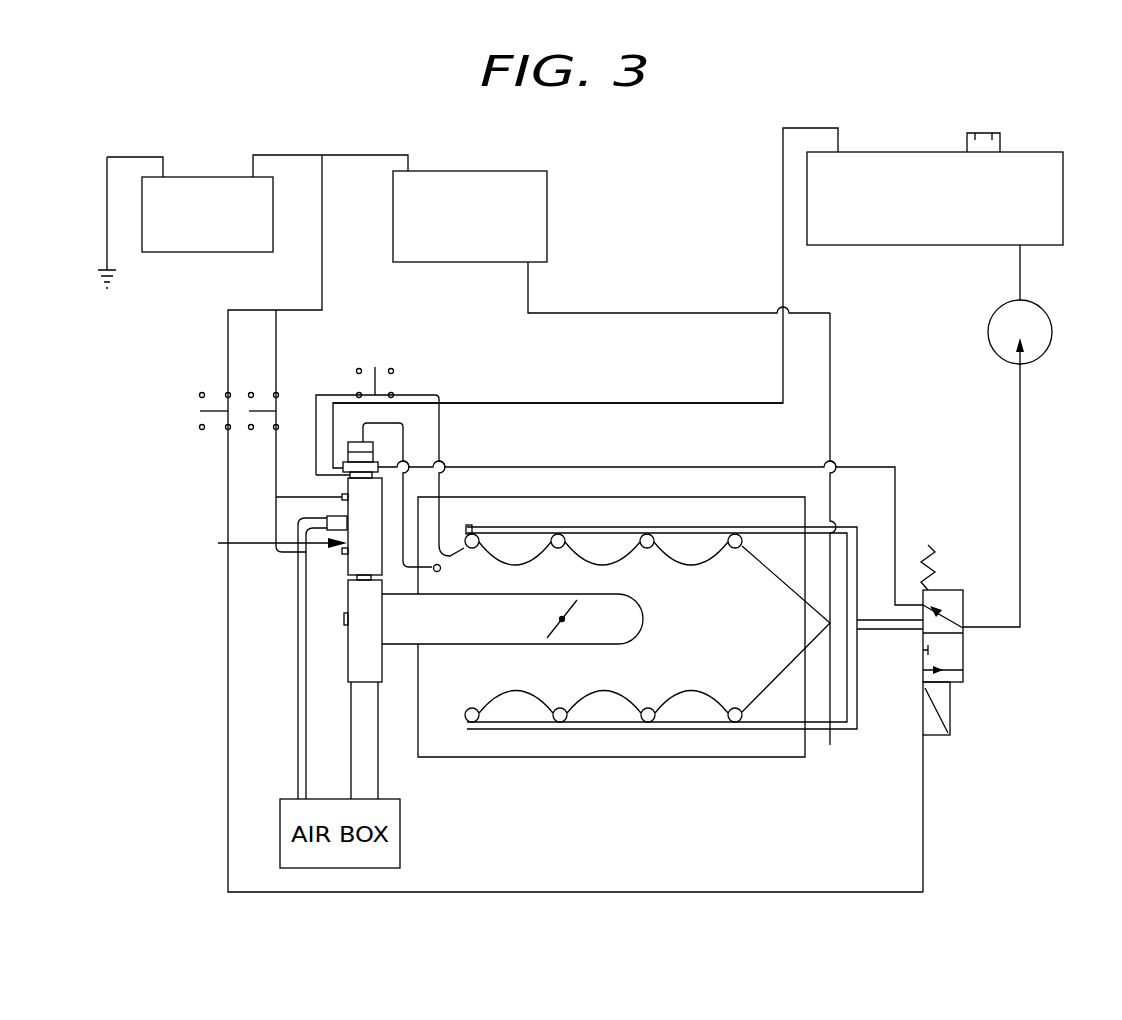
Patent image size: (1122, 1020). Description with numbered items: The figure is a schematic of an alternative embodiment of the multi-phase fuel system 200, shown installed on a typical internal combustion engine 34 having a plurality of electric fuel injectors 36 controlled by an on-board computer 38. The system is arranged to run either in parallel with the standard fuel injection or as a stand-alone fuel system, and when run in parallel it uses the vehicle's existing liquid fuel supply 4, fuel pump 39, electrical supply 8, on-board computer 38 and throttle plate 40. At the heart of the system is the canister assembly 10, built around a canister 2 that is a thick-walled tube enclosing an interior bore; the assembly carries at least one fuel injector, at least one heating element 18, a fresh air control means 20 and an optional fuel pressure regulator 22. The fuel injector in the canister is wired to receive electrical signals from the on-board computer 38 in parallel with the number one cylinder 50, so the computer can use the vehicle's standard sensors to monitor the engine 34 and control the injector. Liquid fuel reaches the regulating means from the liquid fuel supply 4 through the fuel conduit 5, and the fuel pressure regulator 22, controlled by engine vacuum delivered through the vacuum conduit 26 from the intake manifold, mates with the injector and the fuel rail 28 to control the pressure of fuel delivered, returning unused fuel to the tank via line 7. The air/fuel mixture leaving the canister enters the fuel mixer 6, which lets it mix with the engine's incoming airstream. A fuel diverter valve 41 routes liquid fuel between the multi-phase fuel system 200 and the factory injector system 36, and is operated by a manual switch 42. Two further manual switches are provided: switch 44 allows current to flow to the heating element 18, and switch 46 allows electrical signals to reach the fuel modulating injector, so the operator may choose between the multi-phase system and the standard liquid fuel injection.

The multi-phase fuel system 200 is at (630, 163).
The canister 2 is at (348, 578).
The liquid fuel supply 4 is at (915, 247).
The fuel conduit 5 is at (1024, 500).
The fuel mixer 6 is at (346, 645).
The line 7 is at (597, 402).
The electrical supply 8 is at (197, 253).
The canister assembly 10 is at (267, 543).
The heating element 18 is at (342, 497).
The fresh air control means 20 is at (300, 520).
The fuel pressure regulator 22 is at (350, 440).
The vacuum conduit 26 is at (405, 423).
The fuel rail 28 is at (590, 527).
The internal combustion engine 34 is at (658, 772).
The electric fuel injectors 36 is at (830, 745).
The on-board computer 38 is at (547, 234).
The fuel pump 39 is at (1050, 320).
The throttle plate 40 is at (557, 636).
The fuel diverter valve 41 is at (965, 658).
The manual switch 42 is at (202, 429).
The manual switch 44 is at (278, 393).
The manual switch 46 is at (394, 371).
The number one cylinder 50 is at (469, 525).